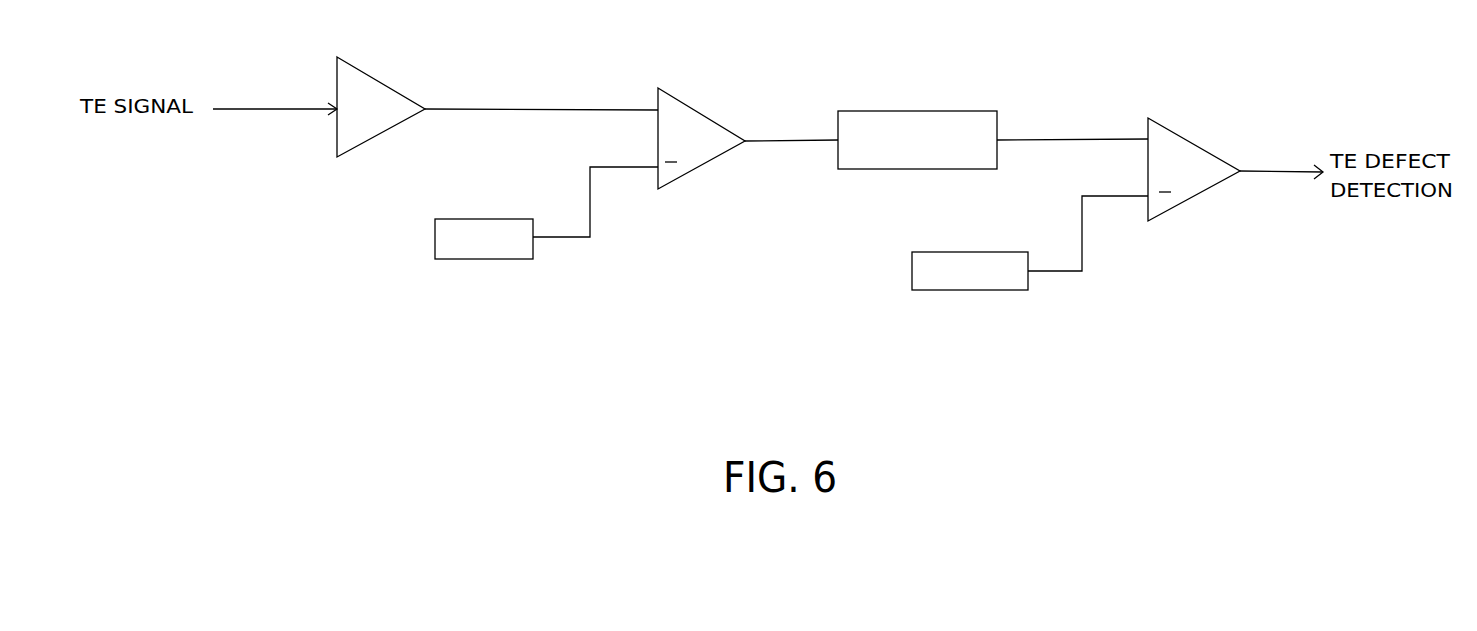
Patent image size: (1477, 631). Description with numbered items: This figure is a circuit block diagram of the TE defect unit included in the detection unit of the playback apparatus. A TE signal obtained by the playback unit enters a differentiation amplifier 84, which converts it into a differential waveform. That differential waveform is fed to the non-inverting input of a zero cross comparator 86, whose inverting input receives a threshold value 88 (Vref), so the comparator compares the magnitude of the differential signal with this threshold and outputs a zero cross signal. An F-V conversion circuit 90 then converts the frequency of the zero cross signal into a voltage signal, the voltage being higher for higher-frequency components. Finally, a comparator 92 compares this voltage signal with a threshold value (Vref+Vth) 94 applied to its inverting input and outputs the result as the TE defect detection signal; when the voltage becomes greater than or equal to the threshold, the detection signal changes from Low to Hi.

The differentiation amplifier 84 is at (393, 87).
The zero cross comparator 86 is at (715, 117).
The threshold value 88 is at (508, 219).
The F-V conversion circuit 90 is at (941, 111).
The comparator 92 is at (1200, 142).
The threshold value (Vref+Vth) 94 is at (1008, 290).